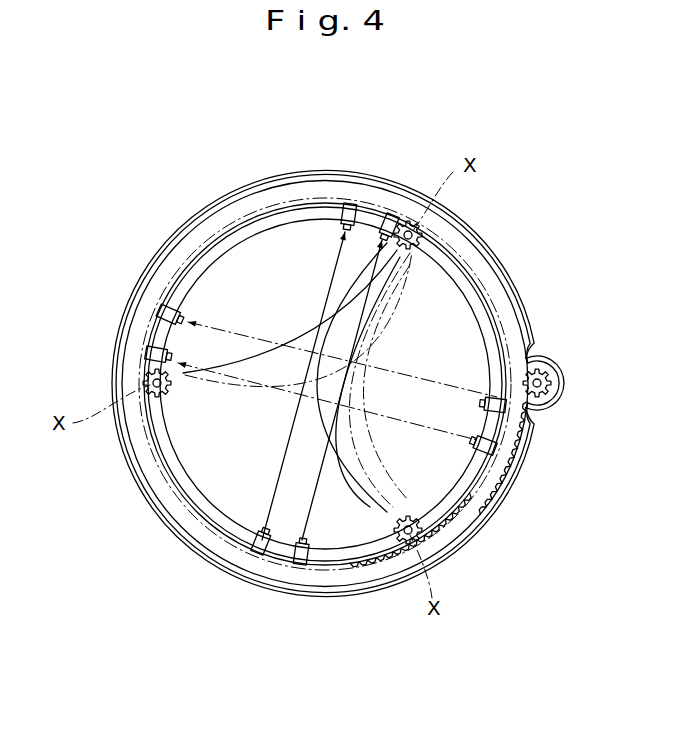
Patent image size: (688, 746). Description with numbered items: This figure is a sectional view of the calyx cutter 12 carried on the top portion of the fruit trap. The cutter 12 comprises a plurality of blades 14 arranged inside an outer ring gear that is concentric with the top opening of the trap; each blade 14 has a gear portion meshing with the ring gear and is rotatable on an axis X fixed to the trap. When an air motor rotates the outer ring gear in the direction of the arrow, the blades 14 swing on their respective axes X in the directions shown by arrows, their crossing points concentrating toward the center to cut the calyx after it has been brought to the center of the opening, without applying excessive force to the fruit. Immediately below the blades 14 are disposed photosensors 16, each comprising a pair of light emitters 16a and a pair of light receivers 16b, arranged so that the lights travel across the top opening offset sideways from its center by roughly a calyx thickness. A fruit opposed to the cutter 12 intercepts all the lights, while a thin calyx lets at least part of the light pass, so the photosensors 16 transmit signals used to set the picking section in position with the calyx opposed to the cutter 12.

The calyx cutter 12 is at (518, 247).
The blades 14 is at (250, 230).
The photosensors 16 is at (319, 391).
The light emitters 16a is at (497, 405).
The light receivers 16b is at (170, 313).